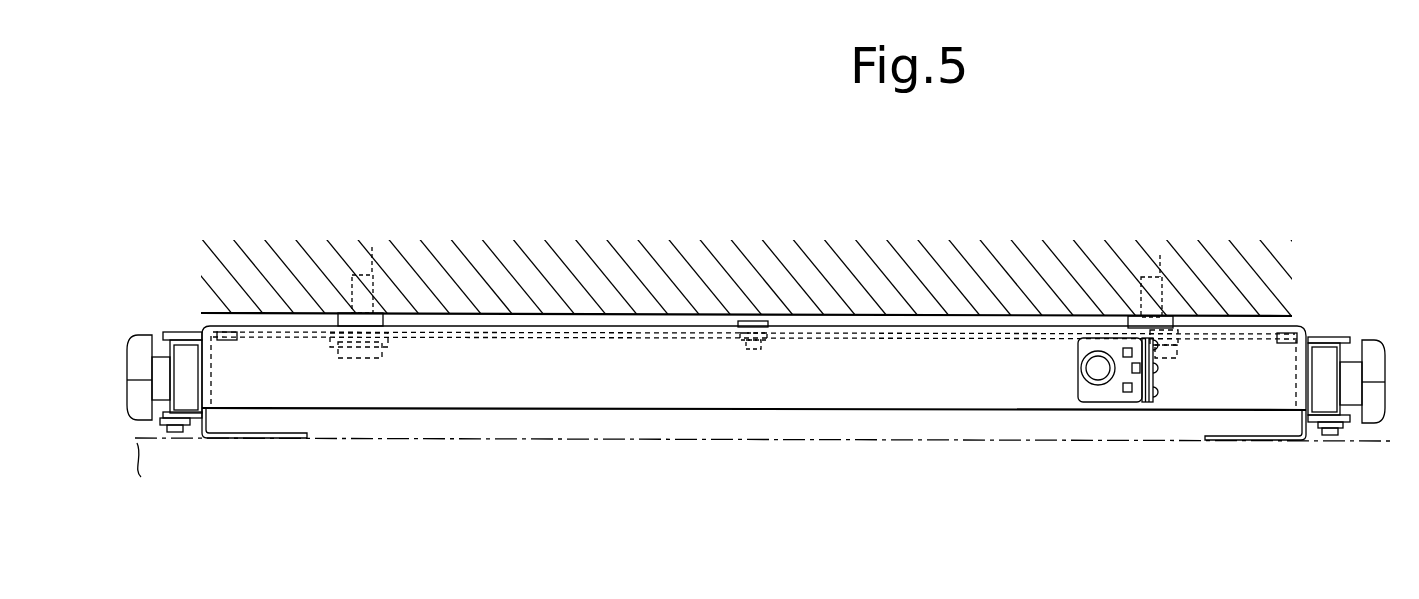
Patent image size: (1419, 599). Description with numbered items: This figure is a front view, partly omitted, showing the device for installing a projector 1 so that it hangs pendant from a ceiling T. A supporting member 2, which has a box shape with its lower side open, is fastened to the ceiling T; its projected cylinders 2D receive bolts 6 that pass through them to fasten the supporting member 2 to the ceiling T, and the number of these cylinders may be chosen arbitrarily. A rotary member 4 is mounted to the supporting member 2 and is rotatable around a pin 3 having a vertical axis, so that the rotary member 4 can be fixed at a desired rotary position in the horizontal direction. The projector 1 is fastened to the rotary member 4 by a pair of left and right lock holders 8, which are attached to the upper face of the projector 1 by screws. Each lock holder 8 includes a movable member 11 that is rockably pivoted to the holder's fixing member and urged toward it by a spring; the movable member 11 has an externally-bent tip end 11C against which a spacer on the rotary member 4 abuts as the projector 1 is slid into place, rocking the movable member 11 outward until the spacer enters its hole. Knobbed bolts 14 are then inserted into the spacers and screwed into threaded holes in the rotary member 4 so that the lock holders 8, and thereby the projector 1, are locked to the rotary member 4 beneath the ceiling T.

The projector 1 is at (1393, 492).
The supporting member 2 is at (947, 333).
The projected cylinder 2D is at (375, 317).
The pin 3 is at (752, 320).
The rotary member 4 is at (600, 392).
The bolt 6 is at (368, 275).
The lock holder 8 is at (180, 332).
The movable member 11 is at (174, 426).
The externally-bent tip end 11C is at (187, 400).
The knobbed bolt 14 is at (137, 345).
The ceiling T is at (1251, 248).